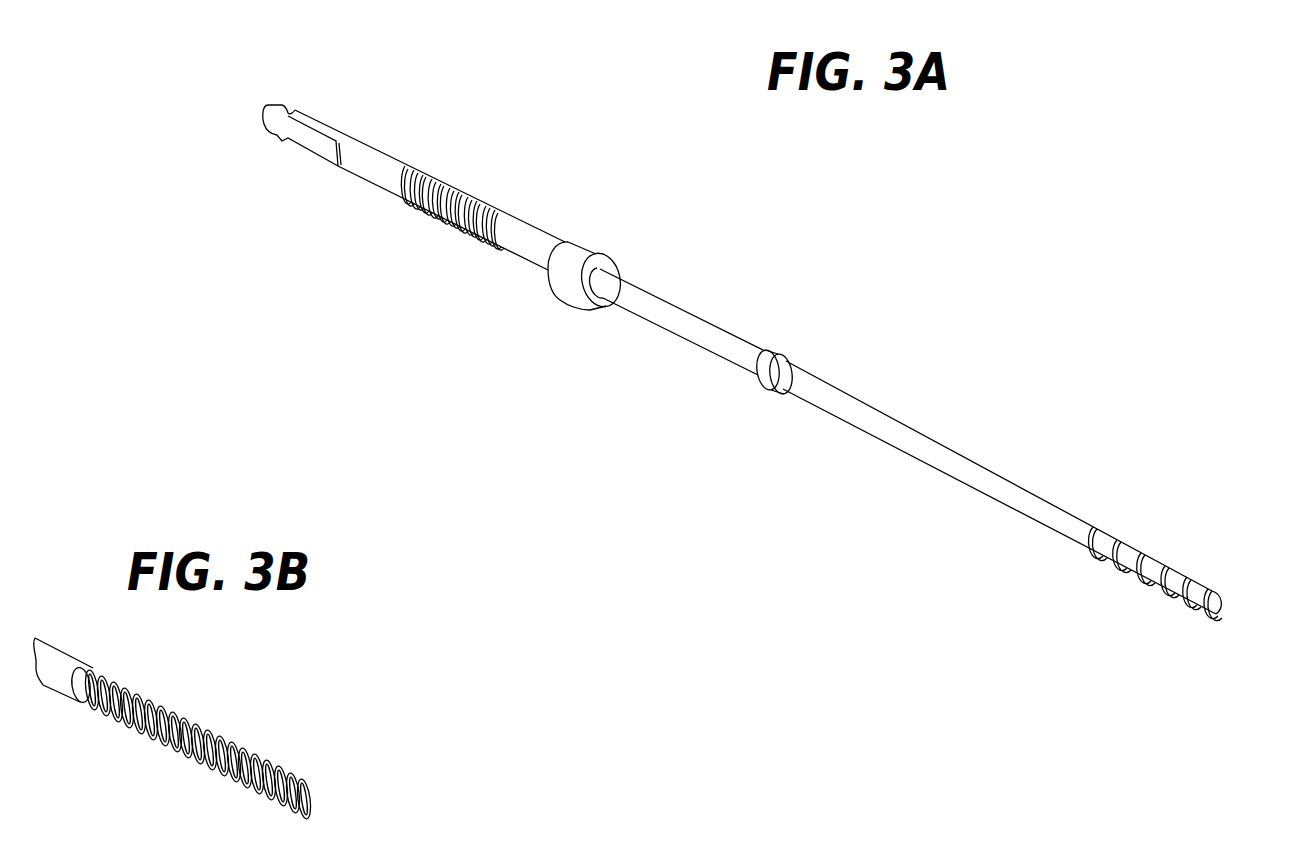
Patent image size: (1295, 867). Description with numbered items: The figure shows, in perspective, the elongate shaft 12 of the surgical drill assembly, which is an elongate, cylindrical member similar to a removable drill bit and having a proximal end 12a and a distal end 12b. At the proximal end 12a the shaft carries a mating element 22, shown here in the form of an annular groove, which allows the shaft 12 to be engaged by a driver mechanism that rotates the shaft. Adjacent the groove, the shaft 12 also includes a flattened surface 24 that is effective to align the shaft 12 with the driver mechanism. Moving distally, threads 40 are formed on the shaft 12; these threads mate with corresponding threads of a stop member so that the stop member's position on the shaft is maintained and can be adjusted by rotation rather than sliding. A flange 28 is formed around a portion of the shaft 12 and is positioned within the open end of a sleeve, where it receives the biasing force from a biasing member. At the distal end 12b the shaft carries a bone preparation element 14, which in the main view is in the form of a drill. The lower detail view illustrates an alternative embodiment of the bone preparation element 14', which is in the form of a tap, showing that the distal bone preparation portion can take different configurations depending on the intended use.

In FIG. 3A, the elongate shaft 12 is at (770, 326).
In FIG. 3A, the proximal end 12a is at (436, 164).
In FIG. 3A, the distal end 12b is at (1038, 497).
In FIG. 3A, the bone preparation element 14 is at (1150, 580).
In FIG. 3B, the bone preparation element 14' is at (200, 736).
In FIG. 3A, the mating element 22 is at (290, 112).
In FIG. 3A, the flattened surface 24 is at (308, 138).
In FIG. 3A, the flange 28 is at (782, 354).
In FIG. 3A, the threads 40 is at (475, 200).